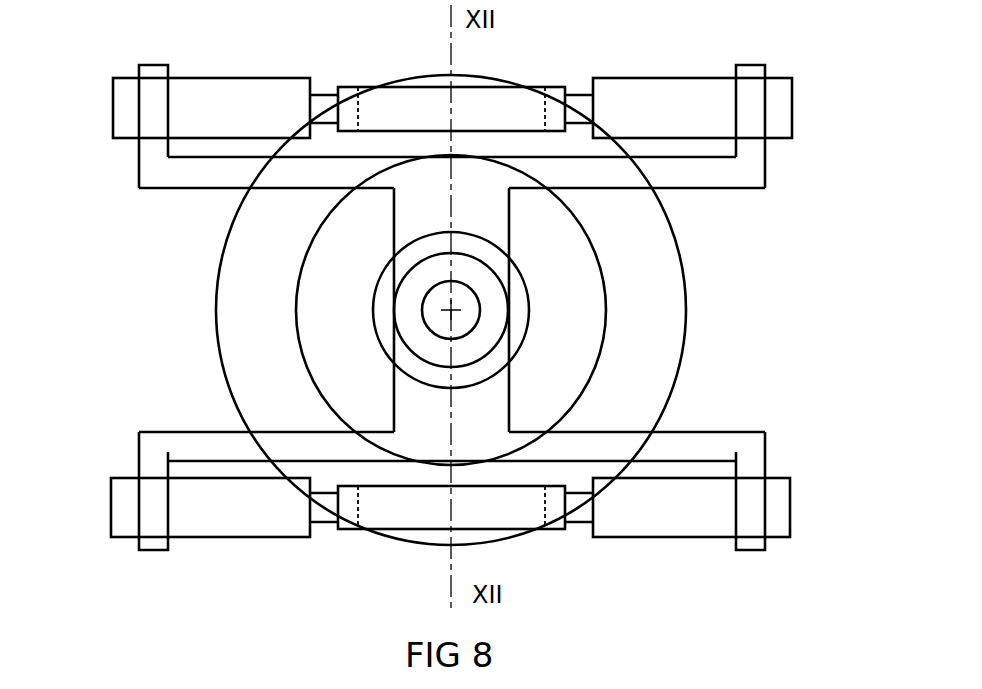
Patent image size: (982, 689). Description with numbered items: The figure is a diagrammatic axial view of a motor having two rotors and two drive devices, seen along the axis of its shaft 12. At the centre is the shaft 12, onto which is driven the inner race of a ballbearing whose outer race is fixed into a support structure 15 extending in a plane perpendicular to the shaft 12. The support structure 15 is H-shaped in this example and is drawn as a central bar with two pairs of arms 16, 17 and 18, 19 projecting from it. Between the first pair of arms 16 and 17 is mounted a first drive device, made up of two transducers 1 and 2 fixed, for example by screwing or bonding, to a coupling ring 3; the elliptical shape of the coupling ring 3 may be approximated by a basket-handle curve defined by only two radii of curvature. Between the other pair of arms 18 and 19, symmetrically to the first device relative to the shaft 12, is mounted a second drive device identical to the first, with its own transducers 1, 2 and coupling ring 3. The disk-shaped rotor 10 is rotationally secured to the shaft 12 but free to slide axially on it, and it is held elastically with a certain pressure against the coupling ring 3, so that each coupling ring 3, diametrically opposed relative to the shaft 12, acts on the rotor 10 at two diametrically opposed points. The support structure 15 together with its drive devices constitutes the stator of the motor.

The transducer 1 is at (240, 90).
The transducer 2 is at (707, 98).
The coupling ring 3 is at (413, 97).
The rotor 10 is at (660, 313).
The shaft 12 is at (437, 303).
The support structure 15 is at (410, 410).
The arm 16 is at (140, 75).
The arm 17 is at (748, 73).
The arm 18 is at (140, 445).
The arm 19 is at (751, 495).